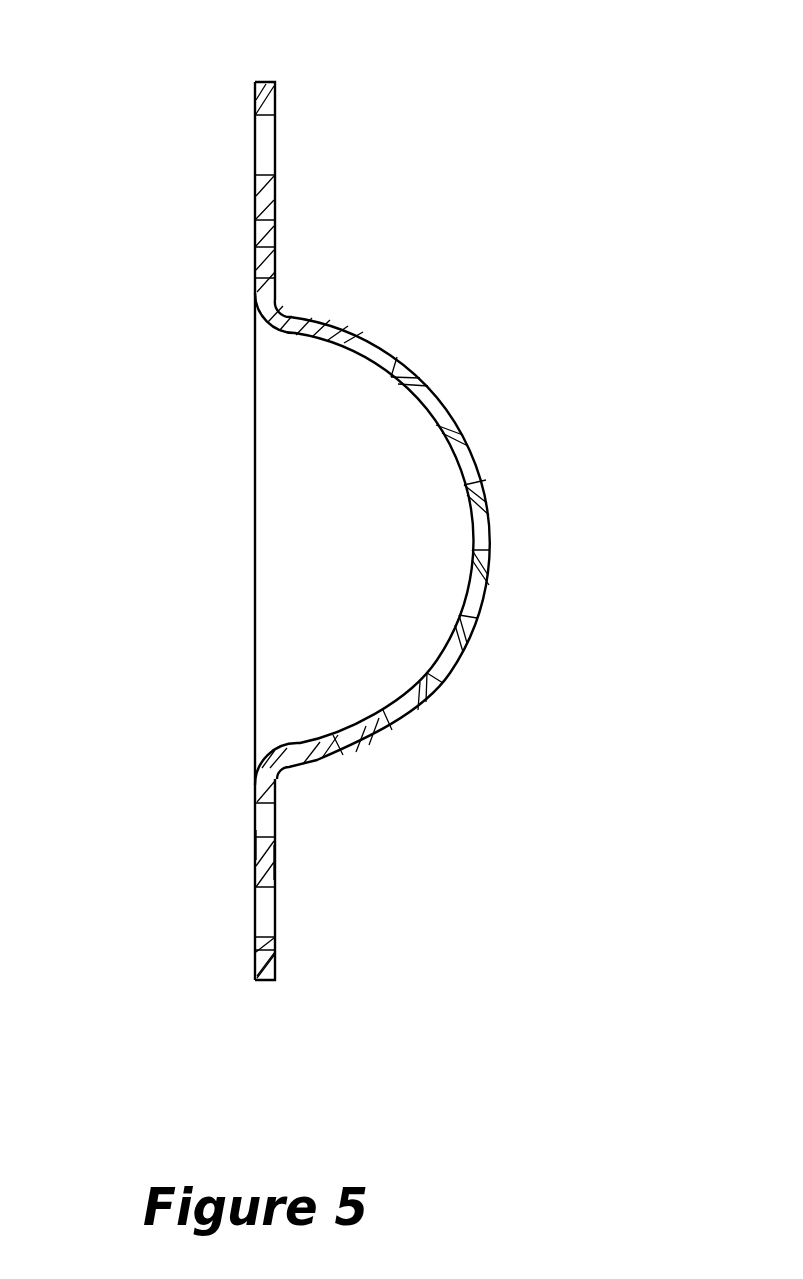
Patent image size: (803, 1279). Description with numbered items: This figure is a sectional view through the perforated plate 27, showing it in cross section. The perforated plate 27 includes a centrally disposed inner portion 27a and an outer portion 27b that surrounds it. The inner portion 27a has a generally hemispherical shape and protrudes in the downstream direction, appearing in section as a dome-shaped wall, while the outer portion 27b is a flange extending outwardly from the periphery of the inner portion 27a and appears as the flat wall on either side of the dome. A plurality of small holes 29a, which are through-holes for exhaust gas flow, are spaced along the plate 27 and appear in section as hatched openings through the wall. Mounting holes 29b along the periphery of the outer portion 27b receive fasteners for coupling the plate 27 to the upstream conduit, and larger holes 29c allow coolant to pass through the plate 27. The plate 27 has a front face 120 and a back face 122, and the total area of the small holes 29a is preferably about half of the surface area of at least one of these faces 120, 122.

The perforated plate 27 is at (130, 260).
The inner portion 27a is at (273, 384).
The outer portion 27b is at (258, 278).
The holes 29a is at (277, 233).
The mounting holes 29b is at (275, 122).
The holes 29c is at (277, 935).
The front face 120 is at (255, 843).
The back face 122 is at (277, 862).